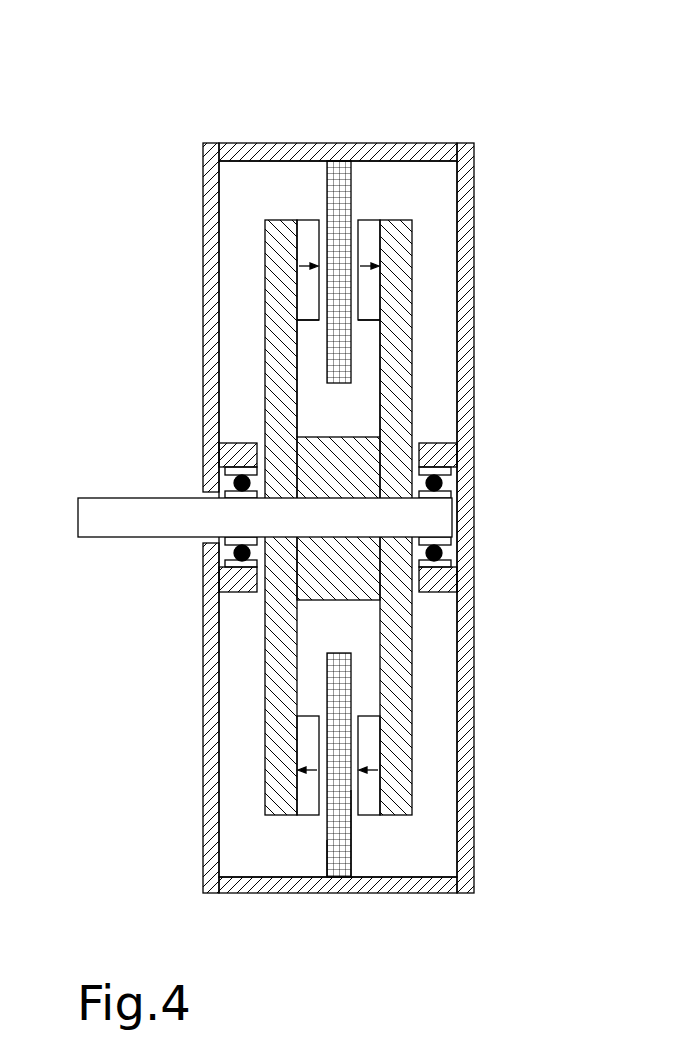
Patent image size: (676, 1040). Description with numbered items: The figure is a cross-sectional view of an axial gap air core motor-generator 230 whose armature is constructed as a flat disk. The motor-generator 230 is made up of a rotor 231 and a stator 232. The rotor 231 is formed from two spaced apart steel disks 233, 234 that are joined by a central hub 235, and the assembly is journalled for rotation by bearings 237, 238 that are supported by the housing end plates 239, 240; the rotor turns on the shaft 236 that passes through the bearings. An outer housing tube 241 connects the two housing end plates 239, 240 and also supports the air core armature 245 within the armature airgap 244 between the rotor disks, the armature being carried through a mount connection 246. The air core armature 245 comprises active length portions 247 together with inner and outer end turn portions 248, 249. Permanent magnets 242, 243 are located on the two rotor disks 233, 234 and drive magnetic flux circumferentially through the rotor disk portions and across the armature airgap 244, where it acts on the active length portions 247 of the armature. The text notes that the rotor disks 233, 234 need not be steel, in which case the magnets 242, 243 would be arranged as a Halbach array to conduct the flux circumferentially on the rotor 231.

The axial gap air core motor-generator 230 is at (313, 504).
The rotor 231 is at (233, 279).
The stator 232 is at (343, 550).
The steel disk 233 is at (274, 480).
The steel disk 234 is at (449, 452).
The central hub 235 is at (362, 453).
The shaft 236 is at (130, 538).
The bearing 237 is at (442, 483).
The bearing 238 is at (232, 483).
The housing end plate 239 is at (467, 797).
The housing end plate 240 is at (203, 770).
The outer housing tube 241 is at (426, 893).
The permanent magnet 242 is at (370, 741).
The permanent magnet 243 is at (310, 818).
The armature airgap 244 is at (352, 827).
The air core armature 245 is at (332, 862).
The mount connection 246 is at (352, 862).
The active length portion 247 is at (351, 306).
The inner end turn portion 248 is at (357, 661).
The outer end turn portion 249 is at (359, 173).